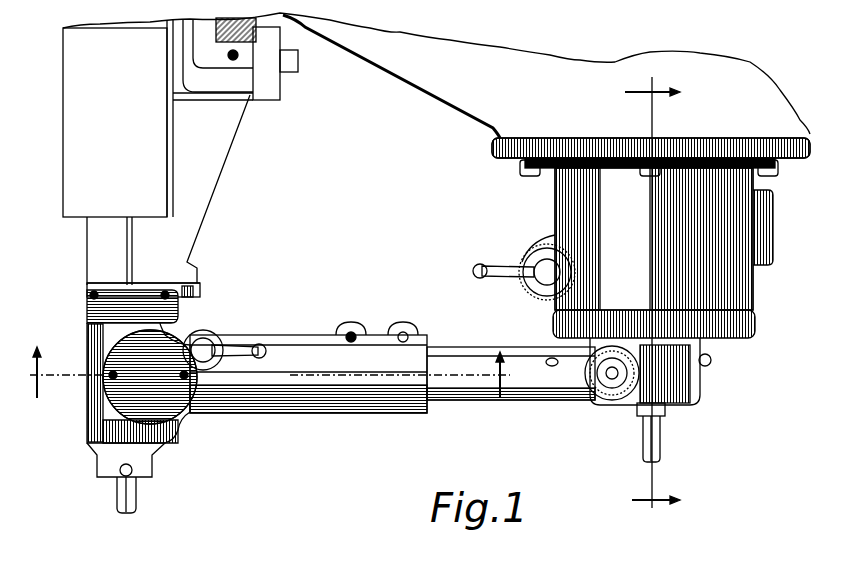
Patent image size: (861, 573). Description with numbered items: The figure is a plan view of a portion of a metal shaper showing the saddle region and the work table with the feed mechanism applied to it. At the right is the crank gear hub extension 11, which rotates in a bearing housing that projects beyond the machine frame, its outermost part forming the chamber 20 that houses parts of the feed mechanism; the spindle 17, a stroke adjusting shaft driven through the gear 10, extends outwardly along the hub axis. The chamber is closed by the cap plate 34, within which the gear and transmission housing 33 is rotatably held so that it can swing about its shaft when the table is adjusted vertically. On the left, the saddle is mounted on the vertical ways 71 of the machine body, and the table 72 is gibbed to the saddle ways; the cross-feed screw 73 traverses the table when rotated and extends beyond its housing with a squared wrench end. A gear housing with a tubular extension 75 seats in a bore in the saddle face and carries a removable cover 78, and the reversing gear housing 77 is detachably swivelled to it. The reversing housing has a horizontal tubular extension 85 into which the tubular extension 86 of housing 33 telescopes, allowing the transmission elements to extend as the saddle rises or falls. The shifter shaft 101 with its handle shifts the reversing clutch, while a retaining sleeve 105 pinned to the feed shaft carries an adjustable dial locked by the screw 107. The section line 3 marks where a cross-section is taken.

The gear 10 is at (218, 158).
The crank gear hub extension 11 is at (652, 297).
The spindle 17 is at (665, 423).
The chamber 20 is at (641, 224).
The section line 3- 3 is at (270, 386).
The gear and transmission housing 33 is at (712, 361).
The cap plate 34 is at (756, 322).
The vertical ways 71 is at (280, 36).
The table 72 is at (72, 218).
The cross-feed screw 73 is at (137, 495).
The tubular extension 75 is at (197, 295).
The reversing gear housing 77 is at (92, 410).
The removable cover 78 is at (87, 312).
The tubular extension 85 is at (297, 335).
The tubular extension 86 is at (452, 347).
The shifter shaft 101 is at (216, 334).
The retaining sleeve 105 is at (100, 456).
The screw 107 is at (133, 469).